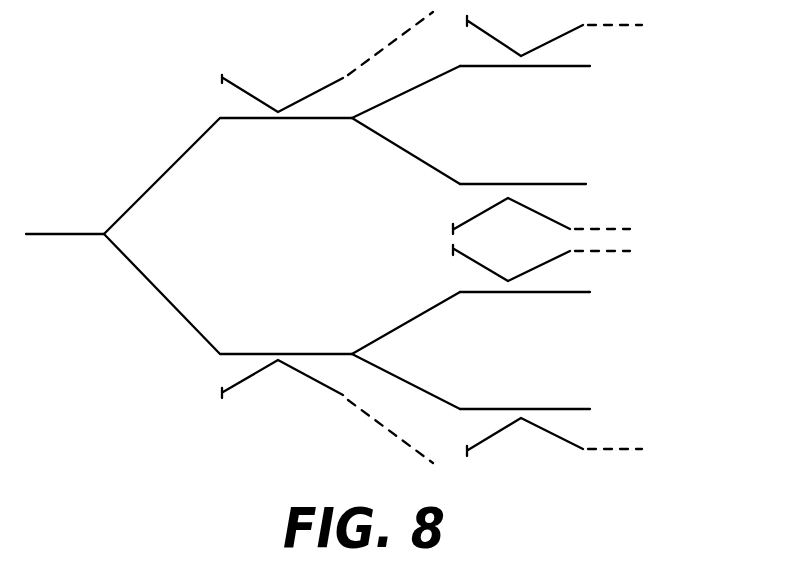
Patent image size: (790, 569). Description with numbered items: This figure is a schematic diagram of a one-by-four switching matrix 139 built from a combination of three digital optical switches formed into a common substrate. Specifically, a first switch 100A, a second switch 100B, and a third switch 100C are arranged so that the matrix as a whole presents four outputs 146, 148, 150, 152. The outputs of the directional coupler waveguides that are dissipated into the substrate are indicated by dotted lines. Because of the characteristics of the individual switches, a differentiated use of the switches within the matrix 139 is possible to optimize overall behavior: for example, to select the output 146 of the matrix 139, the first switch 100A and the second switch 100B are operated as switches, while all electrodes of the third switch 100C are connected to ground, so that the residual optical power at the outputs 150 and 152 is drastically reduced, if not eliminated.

The switching matrix 139 is at (43, 237).
The first switch 100A is at (228, 236).
The second switch 100B is at (421, 125).
The third switch 100C is at (421, 350).
The output 146 is at (576, 67).
The output 148 is at (577, 183).
The output 150 is at (576, 293).
The output 152 is at (577, 408).